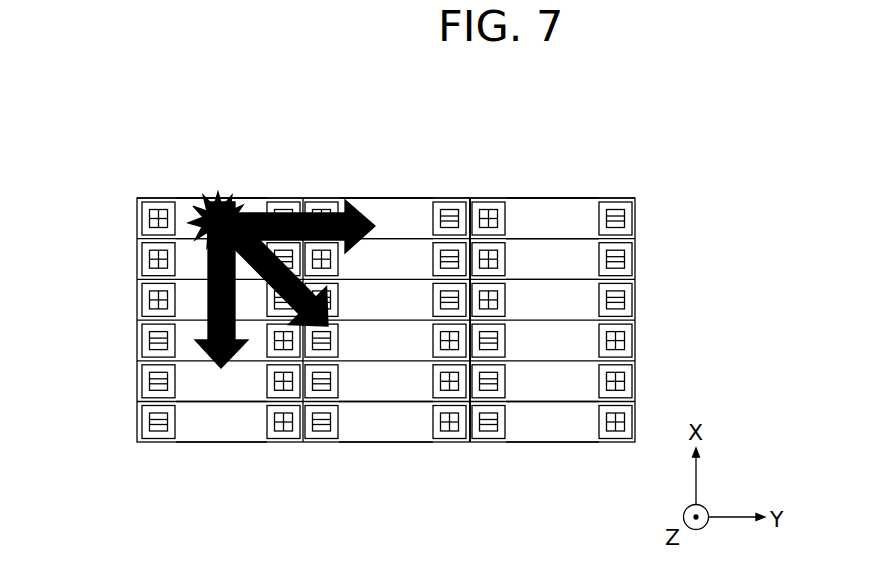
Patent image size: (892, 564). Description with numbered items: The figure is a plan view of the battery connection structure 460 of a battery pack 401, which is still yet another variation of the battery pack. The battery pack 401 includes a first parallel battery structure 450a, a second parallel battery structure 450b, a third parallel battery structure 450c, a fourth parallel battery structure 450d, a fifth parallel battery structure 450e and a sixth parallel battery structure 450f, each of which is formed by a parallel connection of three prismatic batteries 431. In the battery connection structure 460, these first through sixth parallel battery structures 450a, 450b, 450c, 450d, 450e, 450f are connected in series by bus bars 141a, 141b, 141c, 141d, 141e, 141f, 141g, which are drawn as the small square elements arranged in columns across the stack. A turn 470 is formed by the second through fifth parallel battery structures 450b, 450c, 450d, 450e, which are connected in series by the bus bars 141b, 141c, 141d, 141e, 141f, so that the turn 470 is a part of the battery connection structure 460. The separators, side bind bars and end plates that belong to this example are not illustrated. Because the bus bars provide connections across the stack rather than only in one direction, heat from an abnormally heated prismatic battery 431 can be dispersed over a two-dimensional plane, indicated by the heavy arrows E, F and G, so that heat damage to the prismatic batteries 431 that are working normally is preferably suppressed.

The battery pack 401 is at (409, 181).
The battery connection structure 460 is at (559, 171).
The turn 470 is at (520, 196).
The prismatic battery 431 is at (574, 212).
The bus bar 141a is at (147, 233).
The bus bar 141b is at (330, 203).
The bus bar 141c is at (457, 210).
The bus bar 141d is at (630, 218).
The bus bar 141e is at (477, 425).
The bus bar 141f is at (300, 428).
The bus bar 141g is at (145, 430).
The first parallel battery structure 450a is at (182, 210).
The second parallel battery structure 450b is at (388, 205).
The third parallel battery structure 450c is at (575, 250).
The fourth parallel battery structure 450d is at (553, 417).
The fifth parallel battery structure 450e is at (390, 425).
The sixth parallel battery structure 450f is at (205, 428).
The arrow E is at (207, 291).
The arrow F is at (258, 210).
The arrow G is at (265, 288).